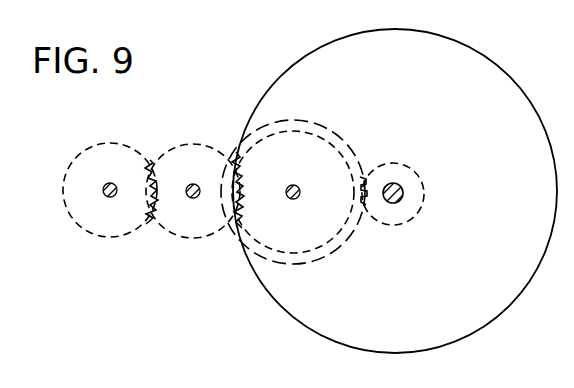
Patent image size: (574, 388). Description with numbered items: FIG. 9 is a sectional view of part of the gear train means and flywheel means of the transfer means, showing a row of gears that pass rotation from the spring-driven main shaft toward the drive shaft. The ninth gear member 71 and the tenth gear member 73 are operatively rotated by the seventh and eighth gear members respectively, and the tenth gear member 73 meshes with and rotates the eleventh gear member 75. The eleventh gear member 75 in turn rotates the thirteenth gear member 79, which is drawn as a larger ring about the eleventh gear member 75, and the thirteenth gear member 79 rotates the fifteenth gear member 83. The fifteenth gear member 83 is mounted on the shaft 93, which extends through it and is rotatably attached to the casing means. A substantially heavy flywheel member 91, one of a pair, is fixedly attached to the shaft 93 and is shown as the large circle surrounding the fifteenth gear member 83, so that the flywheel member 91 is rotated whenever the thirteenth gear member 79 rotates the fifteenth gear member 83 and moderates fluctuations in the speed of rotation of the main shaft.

The ninth gear member 71 is at (108, 217).
The tenth gear member 73 is at (200, 220).
The eleventh gear member 75 is at (307, 233).
The thirteenth gear member 79 is at (338, 143).
The fifteenth gear member 83 is at (422, 215).
The flywheel member 91 is at (502, 107).
The shaft 93 is at (405, 195).